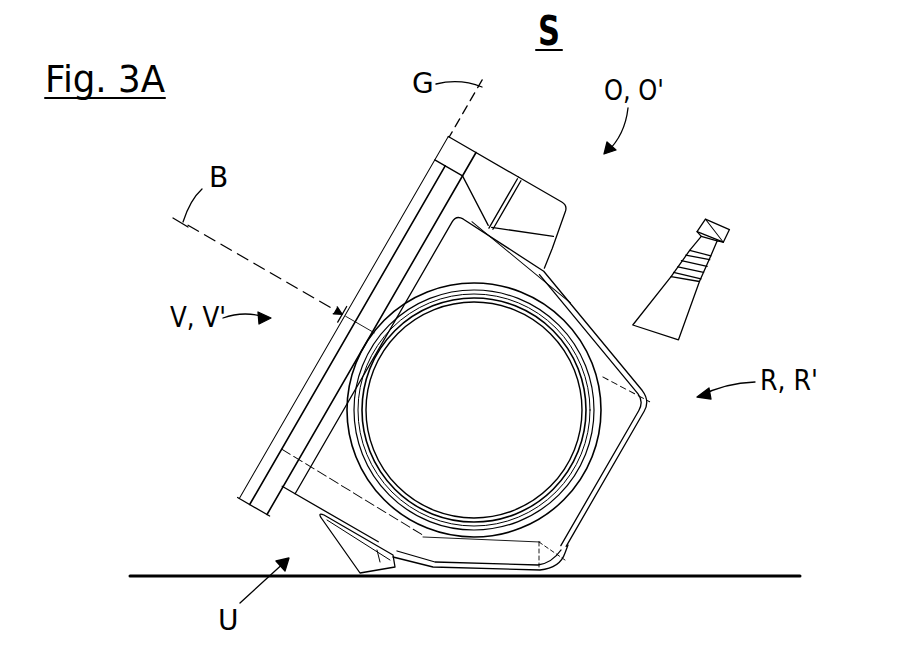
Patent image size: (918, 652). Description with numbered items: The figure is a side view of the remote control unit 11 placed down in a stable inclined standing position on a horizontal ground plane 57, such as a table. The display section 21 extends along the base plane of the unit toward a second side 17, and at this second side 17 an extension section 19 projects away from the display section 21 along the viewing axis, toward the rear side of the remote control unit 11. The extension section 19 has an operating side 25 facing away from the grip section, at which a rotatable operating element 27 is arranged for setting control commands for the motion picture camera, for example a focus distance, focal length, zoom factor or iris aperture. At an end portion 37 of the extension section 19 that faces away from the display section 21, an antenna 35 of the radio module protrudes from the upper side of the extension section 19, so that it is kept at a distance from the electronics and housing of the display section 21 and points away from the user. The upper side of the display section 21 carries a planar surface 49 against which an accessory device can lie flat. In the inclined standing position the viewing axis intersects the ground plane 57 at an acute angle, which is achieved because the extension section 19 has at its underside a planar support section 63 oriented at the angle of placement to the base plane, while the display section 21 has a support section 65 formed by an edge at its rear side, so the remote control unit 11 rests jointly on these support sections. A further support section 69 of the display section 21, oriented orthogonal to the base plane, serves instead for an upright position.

The remote control unit 11 is at (703, 117).
The second side 17 is at (690, 502).
The extension section 19 is at (580, 290).
The display section 21 is at (390, 230).
The operating side 25 is at (543, 273).
The rotatable operating element 27 is at (488, 425).
The antenna 35 is at (677, 323).
The end portion 37 is at (613, 345).
The planar surface 49 is at (520, 184).
The horizontal ground plane 57 is at (744, 576).
The planar support section 63 is at (493, 573).
The support section 65 is at (361, 573).
The further support section 69 is at (273, 527).